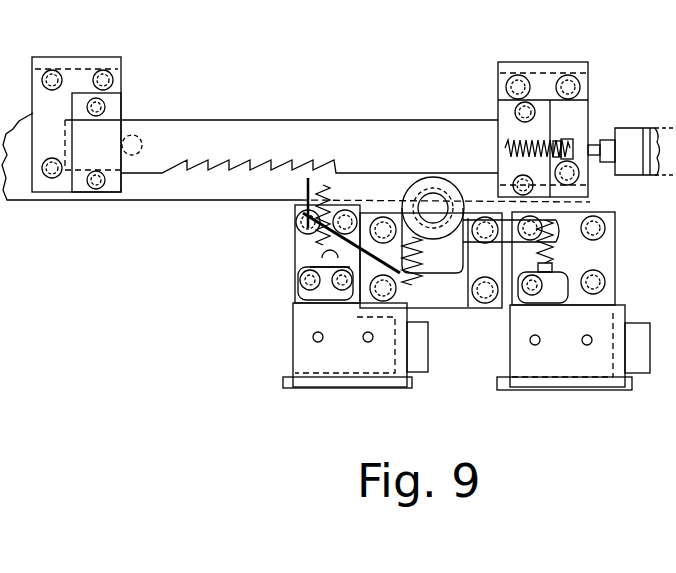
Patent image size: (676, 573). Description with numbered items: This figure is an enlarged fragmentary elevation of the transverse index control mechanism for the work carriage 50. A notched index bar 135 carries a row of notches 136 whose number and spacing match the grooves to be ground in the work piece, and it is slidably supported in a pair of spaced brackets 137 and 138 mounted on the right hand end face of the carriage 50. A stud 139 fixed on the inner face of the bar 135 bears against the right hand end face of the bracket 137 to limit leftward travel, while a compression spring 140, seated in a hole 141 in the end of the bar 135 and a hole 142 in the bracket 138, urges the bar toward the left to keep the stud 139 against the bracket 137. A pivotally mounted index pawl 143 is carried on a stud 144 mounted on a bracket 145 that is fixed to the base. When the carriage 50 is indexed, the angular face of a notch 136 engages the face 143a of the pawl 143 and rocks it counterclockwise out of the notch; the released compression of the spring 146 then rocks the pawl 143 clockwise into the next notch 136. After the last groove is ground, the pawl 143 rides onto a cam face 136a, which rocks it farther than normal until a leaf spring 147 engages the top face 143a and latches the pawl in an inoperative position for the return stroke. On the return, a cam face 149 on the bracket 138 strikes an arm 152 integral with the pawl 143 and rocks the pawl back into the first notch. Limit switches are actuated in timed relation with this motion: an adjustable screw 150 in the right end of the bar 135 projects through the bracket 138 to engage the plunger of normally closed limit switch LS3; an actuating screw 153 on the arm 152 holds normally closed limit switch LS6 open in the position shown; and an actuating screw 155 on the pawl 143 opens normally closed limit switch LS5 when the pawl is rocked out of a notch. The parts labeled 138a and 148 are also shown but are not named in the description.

The carriage 50 is at (147, 192).
The notched index bar 135 is at (322, 128).
The notches 136 is at (260, 179).
The cam face 136a is at (167, 173).
The bracket 137 is at (115, 98).
The bracket 138 is at (507, 112).
The guide block divider 138a is at (550, 107).
The stud 139 is at (138, 136).
The compression spring 140 is at (557, 140).
The hole 141 is at (537, 140).
The hole 142 is at (570, 140).
The index pawl 143 is at (303, 180).
The top face of pawl 143a is at (313, 172).
The stud 144 is at (437, 223).
The bracket 145 is at (452, 293).
The spring 146 is at (421, 272).
The leaf spring 147 is at (307, 215).
The pawl spring 148 is at (335, 180).
The cam face 149 is at (540, 197).
The adjustably mounted screw 150 is at (590, 160).
The arm 152 is at (483, 246).
The actuating screw 153 is at (553, 252).
The actuating screw 155 is at (322, 262).
The limit switch LS3 is at (625, 167).
The limit switch LS5 is at (295, 290).
The limit switch LS6 is at (573, 301).